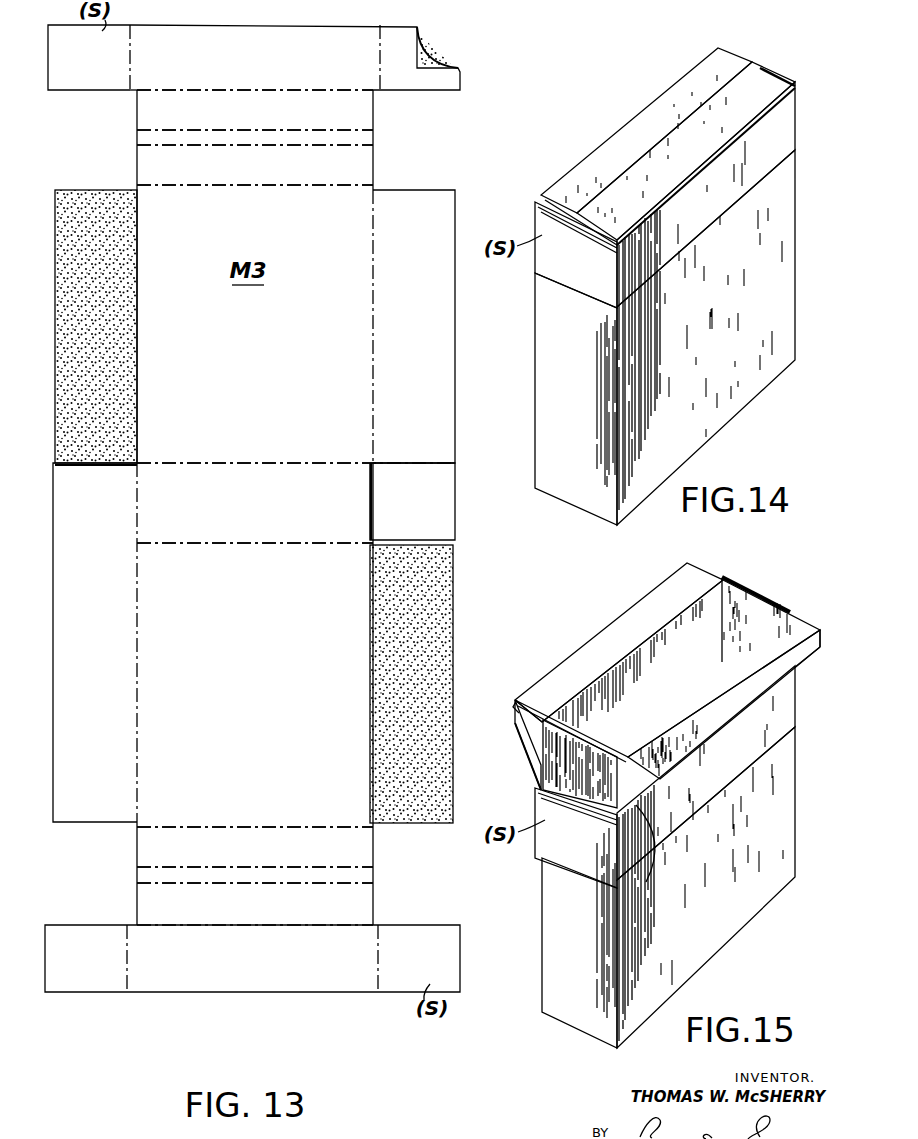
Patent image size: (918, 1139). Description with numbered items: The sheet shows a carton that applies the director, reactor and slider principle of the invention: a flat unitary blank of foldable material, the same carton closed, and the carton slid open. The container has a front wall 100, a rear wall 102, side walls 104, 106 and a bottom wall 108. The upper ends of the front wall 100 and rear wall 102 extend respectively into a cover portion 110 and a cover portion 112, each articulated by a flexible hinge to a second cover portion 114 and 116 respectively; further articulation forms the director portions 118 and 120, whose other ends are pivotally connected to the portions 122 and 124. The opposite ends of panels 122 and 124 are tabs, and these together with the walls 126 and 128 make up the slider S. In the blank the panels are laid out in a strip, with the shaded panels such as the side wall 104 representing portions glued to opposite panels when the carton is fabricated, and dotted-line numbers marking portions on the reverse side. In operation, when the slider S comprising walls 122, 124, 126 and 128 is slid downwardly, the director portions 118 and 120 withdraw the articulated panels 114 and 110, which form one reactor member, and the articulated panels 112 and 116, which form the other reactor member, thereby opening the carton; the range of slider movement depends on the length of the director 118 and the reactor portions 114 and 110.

In FIG. 13, the front wall 100 is at (231, 351).
In FIG. 15, the front wall 100 is at (619, 722).
In FIG. 13, the rear wall 102 is at (231, 681).
In FIG. 14, the rear wall 102 is at (684, 347).
In FIG. 15, the rear wall 102 is at (691, 887).
In FIG. 13, the end flap 104 is at (69, 342).
In FIG. 14, the end flap 104 is at (596, 393).
In FIG. 15, the end flap 104 is at (596, 950).
In FIG. 13, the side wall 106 is at (391, 693).
In FIG. 15, the side wall 106 is at (732, 636).
In FIG. 13, the bottom wall 108 is at (231, 516).
In FIG. 13, the cover portion 110 is at (232, 176).
In FIG. 15, the cover portion 110 is at (590, 660).
In FIG. 13, the cover portion 112 is at (239, 856).
In FIG. 15, the cover portion 112 is at (703, 708).
In FIG. 13, the second cover portion 114 is at (376, 141).
In FIG. 15, the second cover portion 114 is at (516, 703).
In FIG. 13, the second cover portion 116 is at (375, 878).
In FIG. 15, the second cover portion 116 is at (803, 653).
In FIG. 13, the director portion 118 is at (230, 116).
In FIG. 14, the director portion 118 is at (660, 144).
In FIG. 15, the director portion 118 is at (530, 742).
In FIG. 13, the director portion 120 is at (241, 913).
In FIG. 14, the director portion 120 is at (711, 154).
In FIG. 15, the director portion 120 is at (635, 909).
In FIG. 13, the slider wall 122 is at (235, 66).
In FIG. 13, the slider wall 124 is at (235, 966).
In FIG. 14, the slider wall 124 is at (686, 208).
In FIG. 15, the slider wall 124 is at (689, 796).
In FIG. 13, the slider wall 126 is at (66, 74).
In FIG. 14, the slider wall 126 is at (594, 273).
In FIG. 15, the slider wall 126 is at (590, 852).
In FIG. 13, the slider wall 128 is at (396, 966).